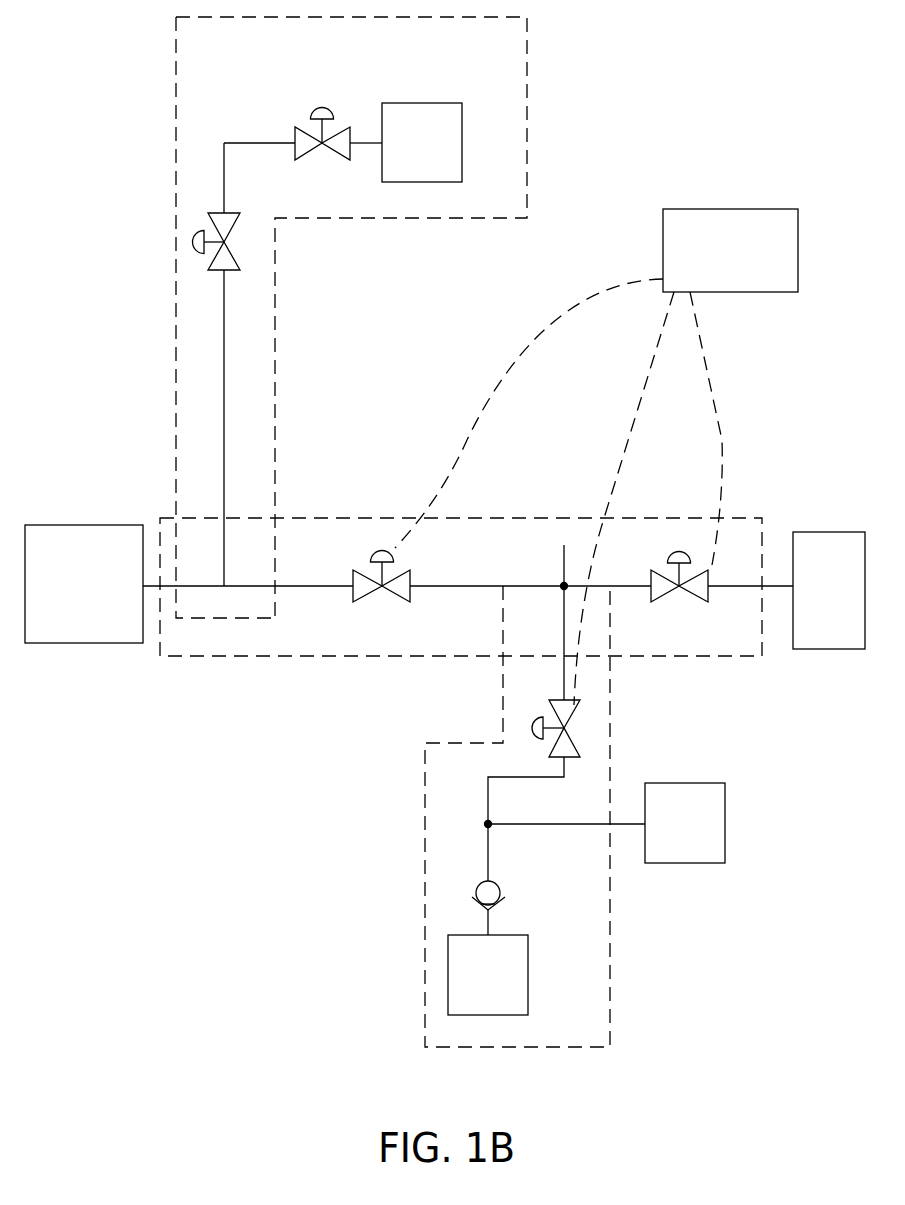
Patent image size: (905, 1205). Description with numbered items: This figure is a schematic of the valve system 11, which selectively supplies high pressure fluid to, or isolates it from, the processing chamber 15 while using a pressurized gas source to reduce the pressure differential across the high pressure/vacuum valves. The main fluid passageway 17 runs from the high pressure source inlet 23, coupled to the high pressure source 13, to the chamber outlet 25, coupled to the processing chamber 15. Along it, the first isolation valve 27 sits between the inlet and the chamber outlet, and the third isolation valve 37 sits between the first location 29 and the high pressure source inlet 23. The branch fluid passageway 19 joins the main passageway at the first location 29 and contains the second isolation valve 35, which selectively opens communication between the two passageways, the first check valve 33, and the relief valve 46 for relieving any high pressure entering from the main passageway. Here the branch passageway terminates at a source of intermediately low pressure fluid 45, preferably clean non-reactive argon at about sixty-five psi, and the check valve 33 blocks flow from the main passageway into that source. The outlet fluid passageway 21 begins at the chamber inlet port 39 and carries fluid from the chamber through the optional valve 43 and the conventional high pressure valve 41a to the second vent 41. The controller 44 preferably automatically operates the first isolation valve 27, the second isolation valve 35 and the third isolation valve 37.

The valve system 11 is at (175, 907).
The high pressure source 13 is at (846, 607).
The processing chamber 15 is at (101, 601).
The main fluid passageway 17 is at (420, 678).
The branch fluid passageway 19 is at (615, 910).
The outlet fluid passageway 21 is at (553, 130).
The high pressure source inlet 23 is at (773, 585).
The chamber outlet 25 is at (166, 596).
The first isolation valve 27 is at (386, 590).
The first location 29 is at (564, 545).
The first check valve 33 is at (475, 892).
The second isolation valve 35 is at (566, 728).
The third isolation valve 37 is at (679, 592).
The chamber inlet port 39 is at (228, 570).
The second vent 41 is at (439, 160).
The conventional high pressure valve 41a is at (328, 110).
The optional valve 43 is at (191, 253).
The controller 44 is at (747, 267).
The source of intermediately low pressure fluid 45 is at (505, 992).
The relief valve 46 is at (702, 840).